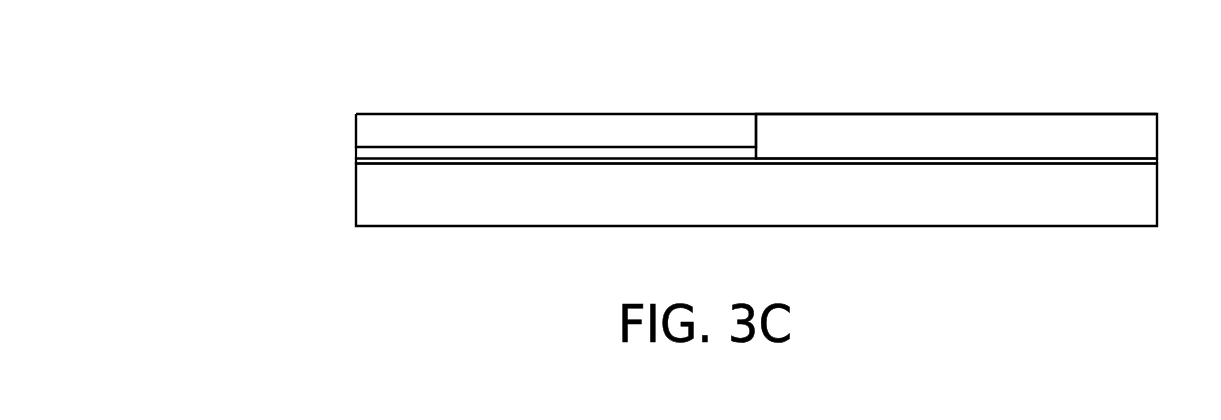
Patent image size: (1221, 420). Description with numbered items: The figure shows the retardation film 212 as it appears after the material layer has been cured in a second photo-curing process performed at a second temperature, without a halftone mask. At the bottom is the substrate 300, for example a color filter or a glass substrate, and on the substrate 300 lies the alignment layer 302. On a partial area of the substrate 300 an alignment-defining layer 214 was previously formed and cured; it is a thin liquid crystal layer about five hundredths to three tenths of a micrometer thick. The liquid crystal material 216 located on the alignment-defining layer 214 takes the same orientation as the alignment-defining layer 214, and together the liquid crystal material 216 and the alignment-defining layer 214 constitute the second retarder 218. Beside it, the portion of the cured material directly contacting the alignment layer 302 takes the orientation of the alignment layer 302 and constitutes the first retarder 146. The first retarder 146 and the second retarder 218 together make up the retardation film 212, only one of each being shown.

The retardation film 212 is at (180, 50).
The first retarder 146 is at (793, 130).
The second retarder 218 is at (238, 95).
The liquid crystal material 216 is at (367, 120).
The alignment-defining layer 214 is at (362, 153).
The alignment layer 302 is at (360, 162).
The substrate 300 is at (360, 201).